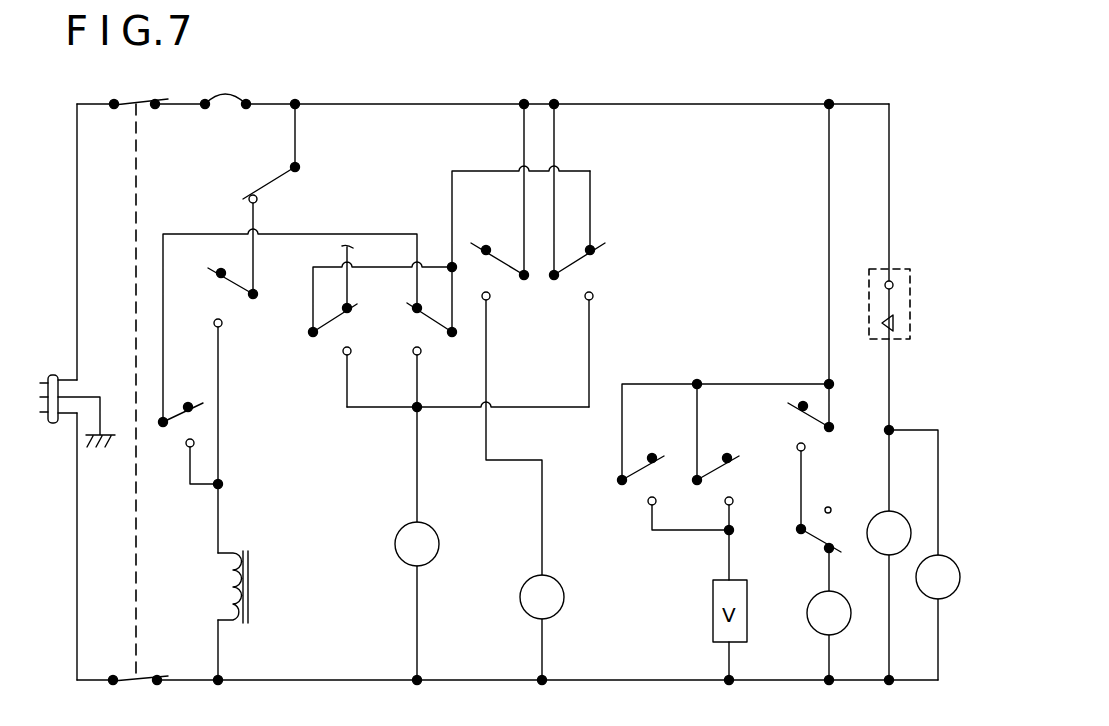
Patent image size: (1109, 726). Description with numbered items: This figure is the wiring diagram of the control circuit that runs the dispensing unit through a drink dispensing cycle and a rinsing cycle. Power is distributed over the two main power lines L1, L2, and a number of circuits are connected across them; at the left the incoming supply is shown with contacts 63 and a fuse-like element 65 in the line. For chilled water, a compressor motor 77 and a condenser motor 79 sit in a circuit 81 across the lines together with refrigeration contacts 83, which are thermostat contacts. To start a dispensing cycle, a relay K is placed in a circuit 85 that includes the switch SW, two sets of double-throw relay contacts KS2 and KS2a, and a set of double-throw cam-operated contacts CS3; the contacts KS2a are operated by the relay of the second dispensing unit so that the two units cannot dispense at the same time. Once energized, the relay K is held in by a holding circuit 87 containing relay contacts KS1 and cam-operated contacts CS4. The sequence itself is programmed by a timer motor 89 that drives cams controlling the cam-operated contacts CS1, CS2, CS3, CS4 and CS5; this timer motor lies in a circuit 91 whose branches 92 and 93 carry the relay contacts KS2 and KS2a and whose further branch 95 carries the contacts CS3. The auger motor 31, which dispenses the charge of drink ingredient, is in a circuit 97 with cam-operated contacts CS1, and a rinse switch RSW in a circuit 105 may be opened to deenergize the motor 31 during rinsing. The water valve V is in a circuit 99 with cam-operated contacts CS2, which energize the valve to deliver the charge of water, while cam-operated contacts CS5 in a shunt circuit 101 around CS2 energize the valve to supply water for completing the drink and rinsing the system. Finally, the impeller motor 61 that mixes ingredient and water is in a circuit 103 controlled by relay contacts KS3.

The main power switch contacts 63 is at (148, 72).
The fuse 65 is at (235, 97).
The main power line L1 is at (440, 104).
The main power line L2 is at (368, 648).
The motor 61 is at (68, 350).
The cam-operated contacts CS4 is at (275, 182).
The relay contacts KS1 is at (241, 280).
The switch SW is at (172, 410).
The holding circuit 87 is at (220, 426).
The circuit 85 is at (212, 488).
The relay K is at (250, 594).
The double-throw relay contacts KS2 is at (332, 335).
The double-throw relay contacts KS2a is at (430, 324).
The branch 93 is at (412, 374).
The branch 92 is at (400, 409).
The circuit 91 is at (427, 472).
The timer motor 89 is at (436, 536).
The relay contacts KS3 is at (508, 272).
The double-throw cam-operated contacts CS3 is at (588, 258).
The branch 95 is at (591, 360).
The circuit 103 is at (489, 438).
The shunt circuit 101 is at (624, 434).
The circuit 99 is at (700, 434).
The cam-operated contacts CS5 is at (641, 466).
The cam-operated contacts CS2 is at (717, 463).
The cam-operated contacts CS1 is at (815, 423).
The circuit 105 is at (803, 499).
The rinse switch RSW is at (816, 549).
The compressor motor 77 is at (879, 514).
The circuit 97 is at (832, 589).
The motor 31 is at (841, 601).
The circuit 81 is at (891, 398).
The refrigeration contacts 83 is at (910, 272).
The condenser motor 79 is at (950, 533).